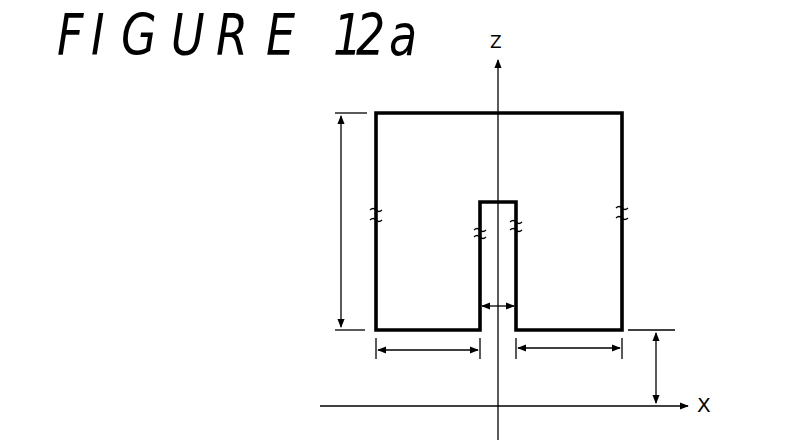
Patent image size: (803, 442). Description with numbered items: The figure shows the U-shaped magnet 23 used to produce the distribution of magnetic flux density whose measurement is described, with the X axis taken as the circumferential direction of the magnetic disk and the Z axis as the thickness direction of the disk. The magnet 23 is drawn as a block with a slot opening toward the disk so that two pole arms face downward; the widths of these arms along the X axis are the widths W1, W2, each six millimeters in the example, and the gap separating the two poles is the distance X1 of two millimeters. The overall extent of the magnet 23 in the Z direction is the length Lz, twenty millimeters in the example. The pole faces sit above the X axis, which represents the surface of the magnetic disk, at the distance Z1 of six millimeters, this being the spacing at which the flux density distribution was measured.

The U-shaped magnet 23 is at (608, 165).
The length in the Z axis direction Lz is at (332, 221).
The width in the X axis direction W1 is at (418, 352).
The width in the X axis direction W2 is at (569, 352).
The distance between both poles X1 is at (490, 310).
The distance from the pole of the magnet to the surface of the magnetic disk Z1 is at (658, 363).